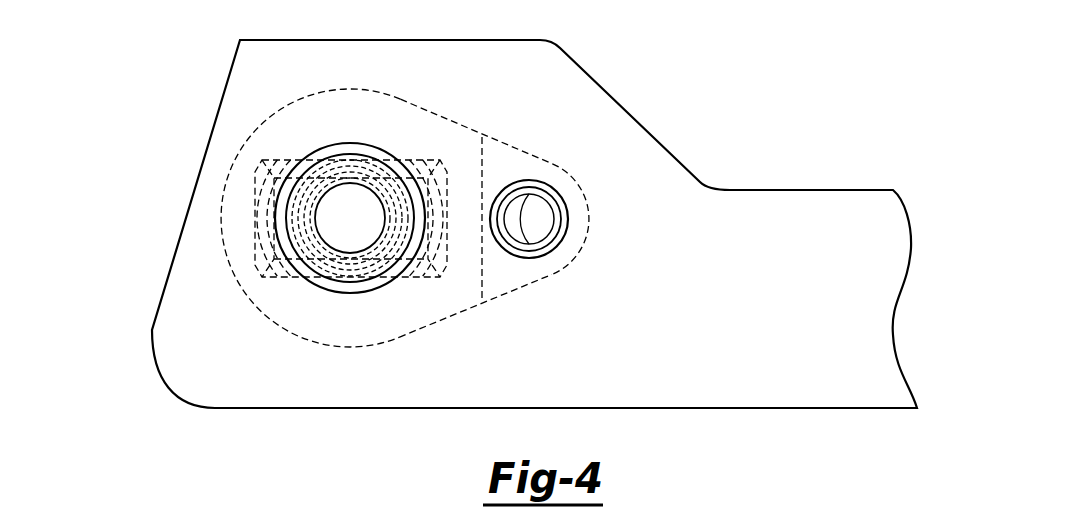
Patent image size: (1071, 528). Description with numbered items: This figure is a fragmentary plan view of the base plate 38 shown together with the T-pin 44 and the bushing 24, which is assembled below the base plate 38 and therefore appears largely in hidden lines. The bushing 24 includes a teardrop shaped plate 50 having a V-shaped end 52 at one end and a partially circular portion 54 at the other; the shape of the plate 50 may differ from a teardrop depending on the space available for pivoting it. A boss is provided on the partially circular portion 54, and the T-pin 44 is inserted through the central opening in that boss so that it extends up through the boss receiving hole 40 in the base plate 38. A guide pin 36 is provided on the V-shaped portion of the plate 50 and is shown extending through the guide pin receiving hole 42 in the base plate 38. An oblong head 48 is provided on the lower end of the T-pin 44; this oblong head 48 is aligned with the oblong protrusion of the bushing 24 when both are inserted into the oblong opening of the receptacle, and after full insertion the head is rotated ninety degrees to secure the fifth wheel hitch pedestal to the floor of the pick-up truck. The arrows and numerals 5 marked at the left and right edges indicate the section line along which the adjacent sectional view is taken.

The bushing 24 is at (436, 114).
The guide pin 36 is at (535, 223).
The base plate 38 is at (577, 96).
The boss receiving hole 40 is at (350, 153).
The guide pin receiving hole 42 is at (553, 214).
The T-pin 44 is at (347, 230).
The oblong head 48 is at (299, 157).
The teardrop shaped plate 50 is at (445, 300).
The V-shaped end 52 is at (512, 170).
The partially circular portion 54 is at (310, 113).
The section line 5- 5 is at (68, 218).